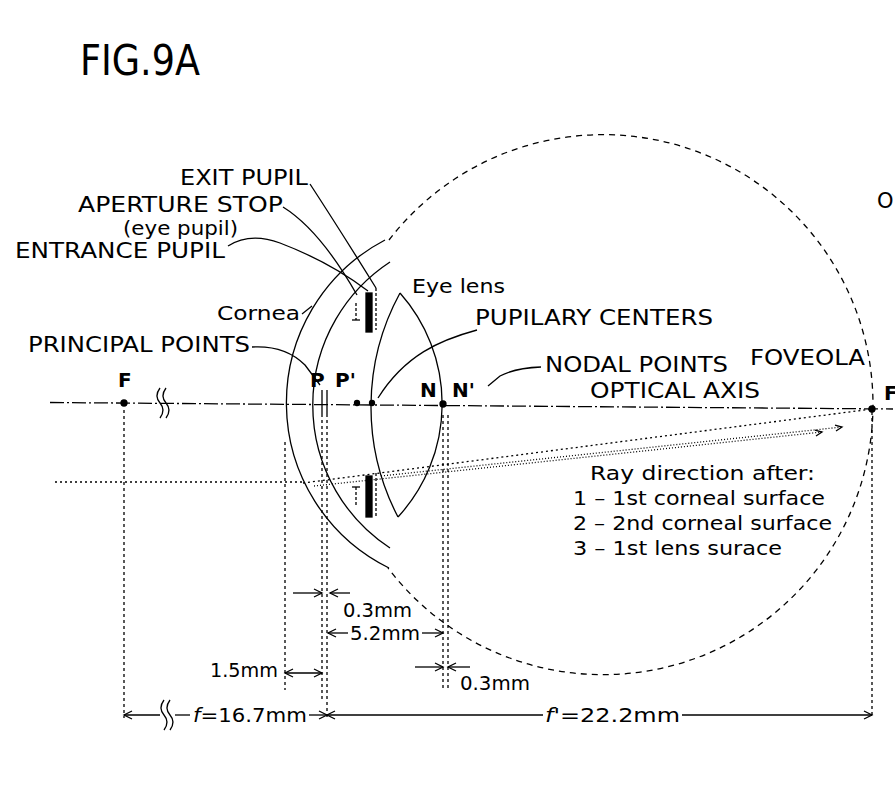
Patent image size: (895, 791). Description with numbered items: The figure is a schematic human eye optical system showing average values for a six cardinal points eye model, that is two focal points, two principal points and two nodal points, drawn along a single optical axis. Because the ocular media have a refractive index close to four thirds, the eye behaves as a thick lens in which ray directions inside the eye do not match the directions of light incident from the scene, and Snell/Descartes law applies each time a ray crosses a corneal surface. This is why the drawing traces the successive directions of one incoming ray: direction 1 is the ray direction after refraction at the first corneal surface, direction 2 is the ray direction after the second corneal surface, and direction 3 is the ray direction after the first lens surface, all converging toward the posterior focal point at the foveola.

The ray direction after 1st corneal surface 1 is at (587, 446).
The ray direction after 2nd corneal surface 2 is at (569, 458).
The ray direction after 1st lens surface 3 is at (620, 450).